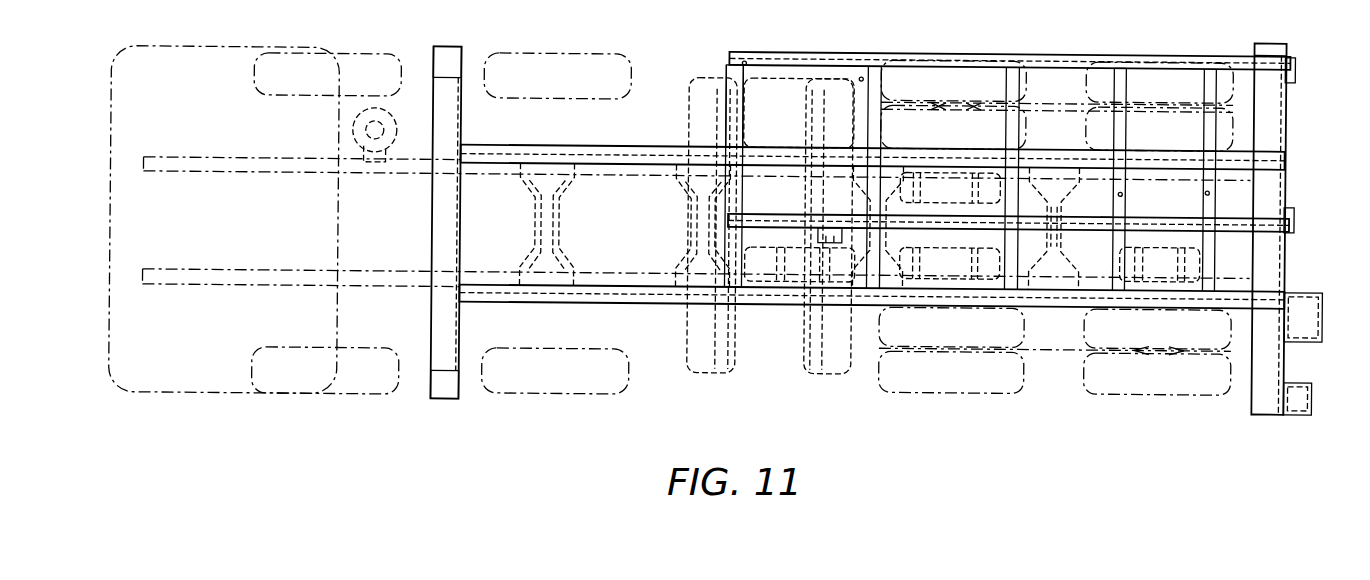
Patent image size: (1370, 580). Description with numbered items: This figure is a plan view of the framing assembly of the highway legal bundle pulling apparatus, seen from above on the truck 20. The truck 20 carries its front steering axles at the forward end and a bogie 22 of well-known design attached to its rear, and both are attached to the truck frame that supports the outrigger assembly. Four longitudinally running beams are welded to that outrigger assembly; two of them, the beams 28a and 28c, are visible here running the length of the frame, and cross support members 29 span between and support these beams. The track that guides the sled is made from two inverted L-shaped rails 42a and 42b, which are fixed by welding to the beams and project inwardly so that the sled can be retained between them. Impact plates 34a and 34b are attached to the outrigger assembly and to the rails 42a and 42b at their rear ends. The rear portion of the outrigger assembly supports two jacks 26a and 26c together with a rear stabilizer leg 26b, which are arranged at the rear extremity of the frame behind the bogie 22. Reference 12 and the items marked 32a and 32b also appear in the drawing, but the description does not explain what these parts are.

The truck body 12 is at (970, 146).
The truck 20 is at (313, 419).
The bogie 22 is at (1124, 420).
The jack 26a is at (1302, 419).
The rear stabilizer leg 26b is at (1305, 307).
The jack 26c is at (1286, 42).
The longitudinally running beam 28a is at (650, 294).
The longitudinally running beam 28c is at (650, 170).
The cross support members 29 is at (860, 78).
The lift axle mounting bracket 32a is at (815, 221).
The lift axle hanger post 32b is at (791, 73).
The impact plate 34a is at (1296, 70).
The impact plate 34b is at (1296, 220).
The inverted L-shaped rail 42a is at (1106, 222).
The inverted L-shaped rail 42b is at (1164, 57).